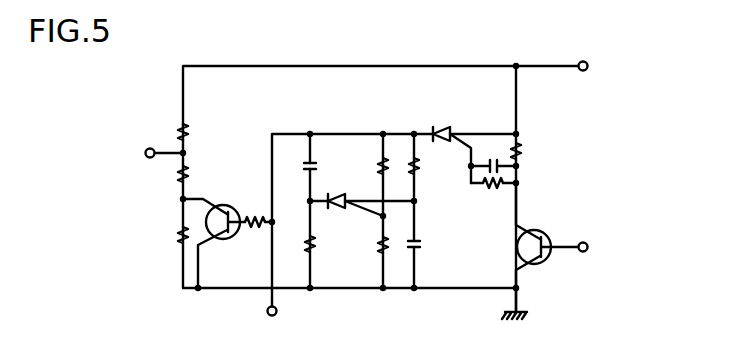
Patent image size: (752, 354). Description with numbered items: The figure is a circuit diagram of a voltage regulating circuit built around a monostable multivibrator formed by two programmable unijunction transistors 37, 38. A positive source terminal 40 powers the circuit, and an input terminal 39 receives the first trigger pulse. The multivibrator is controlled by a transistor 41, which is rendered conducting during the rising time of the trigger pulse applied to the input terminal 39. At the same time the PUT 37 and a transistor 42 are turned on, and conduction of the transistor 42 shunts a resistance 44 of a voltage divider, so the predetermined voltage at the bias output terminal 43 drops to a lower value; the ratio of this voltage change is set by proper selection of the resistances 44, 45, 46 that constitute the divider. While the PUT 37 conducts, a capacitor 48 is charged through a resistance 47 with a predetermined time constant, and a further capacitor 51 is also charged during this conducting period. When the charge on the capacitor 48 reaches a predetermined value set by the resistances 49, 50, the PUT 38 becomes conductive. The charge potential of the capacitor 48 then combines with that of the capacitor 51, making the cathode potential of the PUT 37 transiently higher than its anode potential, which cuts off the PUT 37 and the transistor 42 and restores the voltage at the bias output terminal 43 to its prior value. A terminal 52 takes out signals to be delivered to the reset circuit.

The programmable unijunction transistor 37 is at (441, 128).
The programmable unijunction transistor 38 is at (345, 209).
The input terminal 39 is at (588, 247).
The positive source terminal 40 is at (581, 62).
The transistor 41 is at (517, 248).
The transistor 42 is at (222, 205).
The bias output terminal 43 is at (150, 148).
The resistance 44 is at (180, 233).
The resistance 45 is at (179, 176).
The resistance 46 is at (189, 131).
The resistance 47 is at (418, 166).
The capacitor 48 is at (421, 247).
The resistance 49 is at (380, 249).
The resistance 50 is at (378, 171).
The capacitor 51 is at (307, 162).
The terminal 52 is at (277, 314).